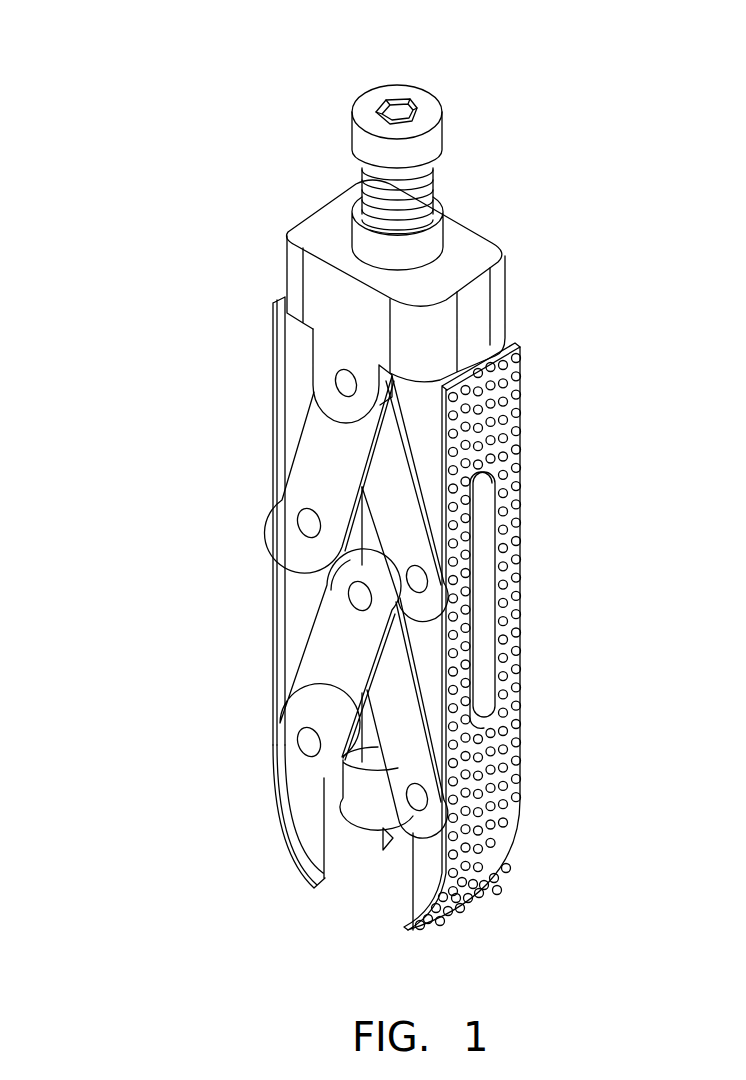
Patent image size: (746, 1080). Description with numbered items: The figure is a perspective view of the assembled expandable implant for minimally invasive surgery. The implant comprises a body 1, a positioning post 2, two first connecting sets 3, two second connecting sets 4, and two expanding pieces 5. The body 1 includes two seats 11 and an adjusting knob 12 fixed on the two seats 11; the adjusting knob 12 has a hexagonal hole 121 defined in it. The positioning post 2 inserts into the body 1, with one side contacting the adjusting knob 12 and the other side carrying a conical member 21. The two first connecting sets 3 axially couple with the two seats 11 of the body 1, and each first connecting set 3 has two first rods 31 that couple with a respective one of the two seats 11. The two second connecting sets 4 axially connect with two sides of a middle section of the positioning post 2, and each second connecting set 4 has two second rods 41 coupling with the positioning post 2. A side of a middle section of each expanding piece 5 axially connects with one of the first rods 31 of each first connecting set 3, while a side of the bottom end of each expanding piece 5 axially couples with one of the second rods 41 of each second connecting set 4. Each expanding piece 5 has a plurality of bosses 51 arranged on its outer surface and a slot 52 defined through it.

The body 1 is at (473, 327).
The seat 11 is at (330, 362).
The adjusting knob 12 is at (428, 143).
The hexagonal hole 121 is at (403, 108).
The positioning post 2 is at (360, 732).
The conical member 21 is at (380, 810).
The first connecting set 3 is at (120, 488).
The first rod 31 is at (320, 482).
The second connecting set 4 is at (130, 672).
The second rod 41 is at (325, 683).
The expanding piece 5 is at (293, 587).
The boss 51 is at (520, 382).
The slot 52 is at (482, 593).